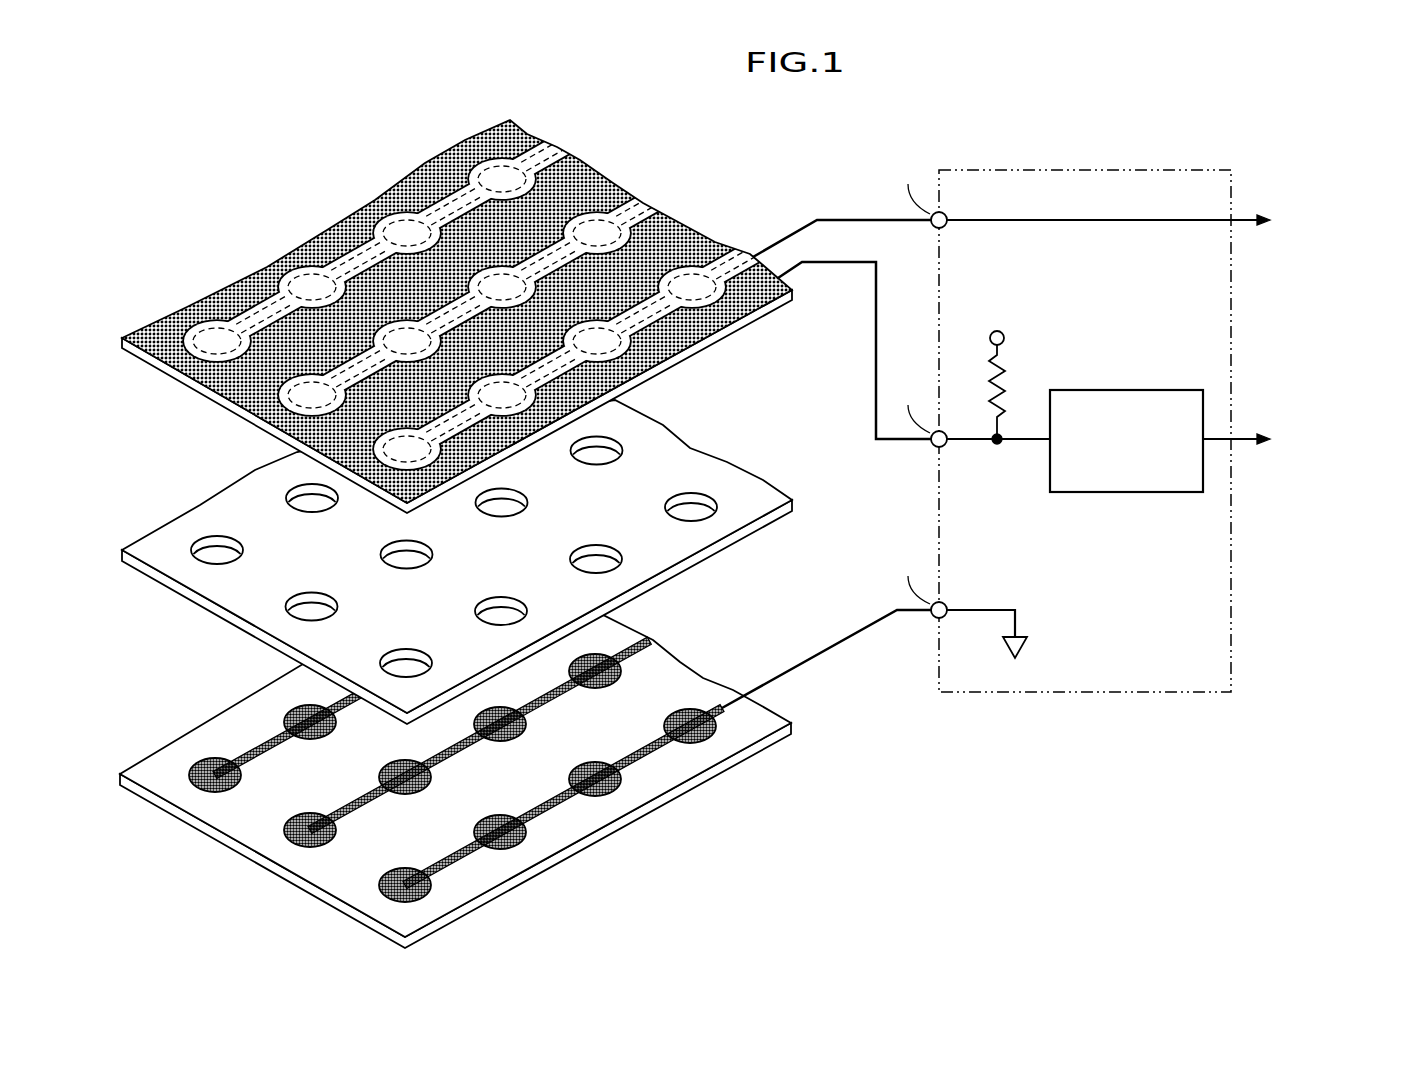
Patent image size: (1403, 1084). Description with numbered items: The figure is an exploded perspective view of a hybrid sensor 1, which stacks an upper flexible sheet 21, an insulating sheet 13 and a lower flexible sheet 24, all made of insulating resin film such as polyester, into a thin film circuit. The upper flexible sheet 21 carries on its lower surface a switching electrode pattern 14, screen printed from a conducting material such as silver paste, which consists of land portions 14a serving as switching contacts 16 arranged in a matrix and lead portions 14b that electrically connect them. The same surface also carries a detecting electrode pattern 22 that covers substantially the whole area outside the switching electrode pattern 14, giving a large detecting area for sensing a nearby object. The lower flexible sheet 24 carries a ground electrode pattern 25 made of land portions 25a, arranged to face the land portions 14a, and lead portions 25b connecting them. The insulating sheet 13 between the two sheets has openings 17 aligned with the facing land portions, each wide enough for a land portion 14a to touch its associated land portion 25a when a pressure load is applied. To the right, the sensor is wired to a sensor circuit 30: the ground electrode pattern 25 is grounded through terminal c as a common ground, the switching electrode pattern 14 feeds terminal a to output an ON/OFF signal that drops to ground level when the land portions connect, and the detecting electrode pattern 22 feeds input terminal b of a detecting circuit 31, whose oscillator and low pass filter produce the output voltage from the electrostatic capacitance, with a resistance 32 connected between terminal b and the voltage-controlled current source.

The hybrid sensor 1 is at (468, 515).
The insulating sheet 13 is at (737, 540).
The switching electrode pattern 14 is at (497, 167).
The land portions 14a is at (372, 203).
The lead portions 14b is at (450, 192).
The switching contacts 16 is at (394, 450).
The openings 17 is at (393, 665).
The upper flexible sheet 21 is at (717, 340).
The detecting electrode pattern 22 is at (457, 290).
The lower flexible sheet 24 is at (738, 752).
The ground electrode pattern 25 is at (456, 795).
The land portions 25a is at (378, 883).
The lead portions 25b is at (458, 858).
The sensor circuit 30 is at (1139, 398).
The detecting circuit 31 is at (1128, 390).
The resistance 32 is at (1002, 385).